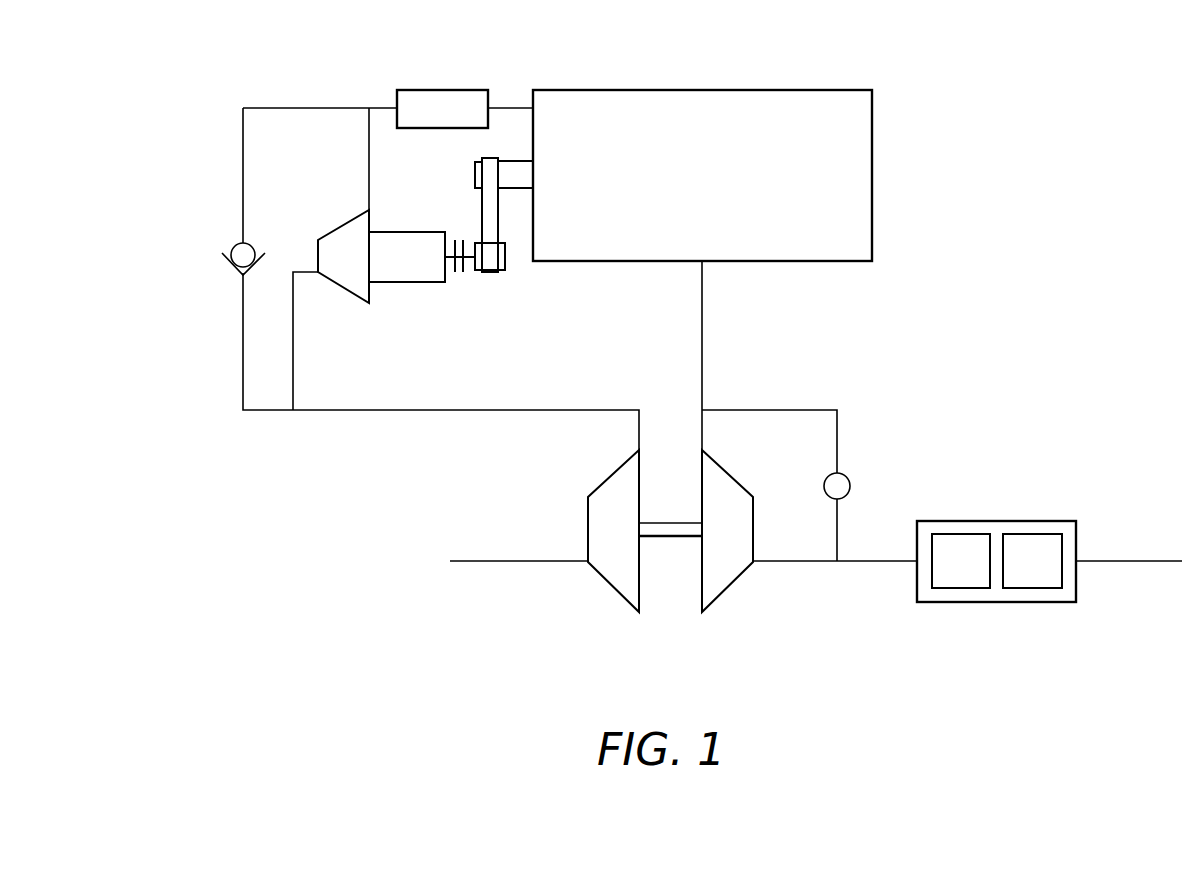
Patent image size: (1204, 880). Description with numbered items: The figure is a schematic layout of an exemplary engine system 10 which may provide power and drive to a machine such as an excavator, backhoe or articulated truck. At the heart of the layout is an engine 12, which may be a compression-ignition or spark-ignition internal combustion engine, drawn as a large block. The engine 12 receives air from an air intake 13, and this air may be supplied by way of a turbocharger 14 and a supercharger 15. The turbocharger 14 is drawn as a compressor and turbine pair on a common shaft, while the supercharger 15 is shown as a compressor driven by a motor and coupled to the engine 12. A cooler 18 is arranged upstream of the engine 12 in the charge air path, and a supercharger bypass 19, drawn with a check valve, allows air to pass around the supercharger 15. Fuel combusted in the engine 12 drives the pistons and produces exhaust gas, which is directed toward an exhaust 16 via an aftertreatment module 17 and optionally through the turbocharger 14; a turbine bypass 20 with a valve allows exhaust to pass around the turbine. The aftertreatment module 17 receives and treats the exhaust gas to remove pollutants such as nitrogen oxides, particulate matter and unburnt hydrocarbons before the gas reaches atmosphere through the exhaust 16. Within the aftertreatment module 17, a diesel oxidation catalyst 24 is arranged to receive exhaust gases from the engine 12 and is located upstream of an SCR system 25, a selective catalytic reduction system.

The engine system 10 is at (1047, 270).
The engine 12 is at (843, 90).
The air intake 13 is at (492, 562).
The turbocharger 14 is at (671, 638).
The supercharger 15 is at (341, 290).
The exhaust 16 is at (1143, 561).
The aftertreatment module 17 is at (996, 557).
The cooler 18 is at (420, 90).
The supercharger bypass 19 is at (214, 209).
The turbine bypass 20 is at (873, 413).
The diesel oxidation catalyst 24 is at (960, 588).
The SCR system 25 is at (1033, 588).